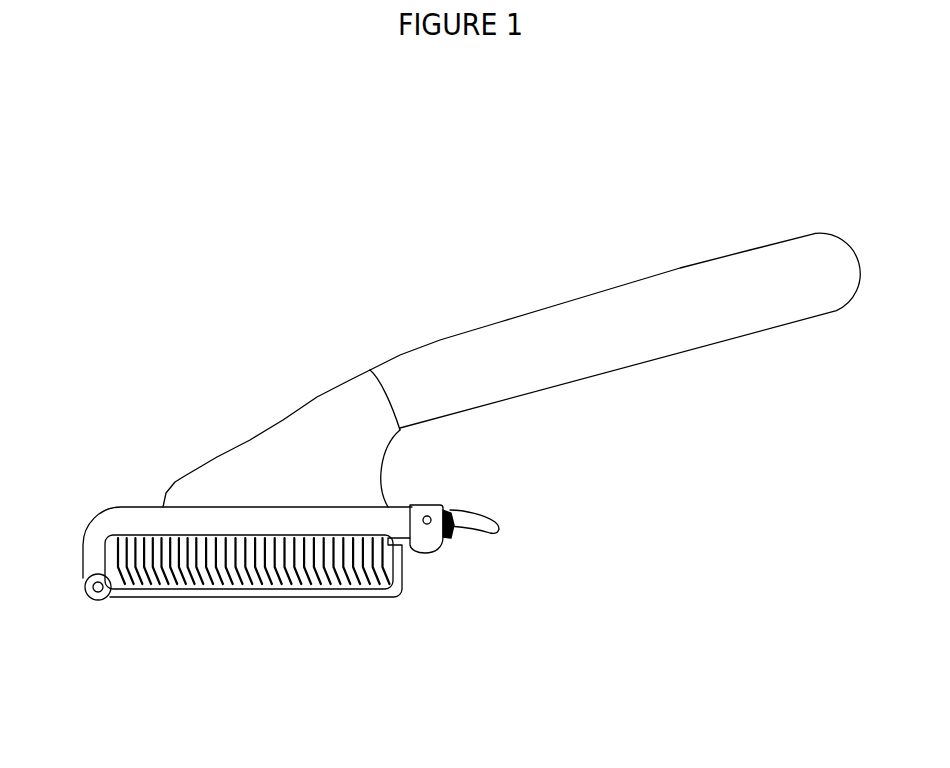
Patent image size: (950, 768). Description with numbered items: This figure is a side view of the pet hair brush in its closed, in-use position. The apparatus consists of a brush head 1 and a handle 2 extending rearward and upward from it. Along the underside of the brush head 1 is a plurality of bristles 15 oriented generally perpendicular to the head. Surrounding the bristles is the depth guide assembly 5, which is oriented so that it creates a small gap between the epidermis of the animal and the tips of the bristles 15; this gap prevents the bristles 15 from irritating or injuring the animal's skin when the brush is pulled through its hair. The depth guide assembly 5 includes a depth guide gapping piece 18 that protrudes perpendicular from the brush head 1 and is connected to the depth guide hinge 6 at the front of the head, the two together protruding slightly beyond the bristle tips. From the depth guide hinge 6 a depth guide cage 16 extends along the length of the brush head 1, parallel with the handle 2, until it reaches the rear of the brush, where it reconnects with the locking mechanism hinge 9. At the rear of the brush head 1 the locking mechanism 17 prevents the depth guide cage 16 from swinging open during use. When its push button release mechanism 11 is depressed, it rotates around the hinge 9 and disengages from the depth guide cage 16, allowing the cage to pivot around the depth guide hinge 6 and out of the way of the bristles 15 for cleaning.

The brush head 1 is at (198, 450).
The handle 2 is at (743, 353).
The depth guide assembly 5 is at (120, 623).
The depth guide hinge 6 is at (86, 589).
The locking mechanism hinge 9 is at (440, 508).
The push button release mechanism 11 is at (502, 525).
The bristles 15 is at (322, 582).
The depth guide cage 16 is at (260, 618).
The locking mechanism 17 is at (458, 552).
The depth guide gapping piece 18 is at (83, 548).